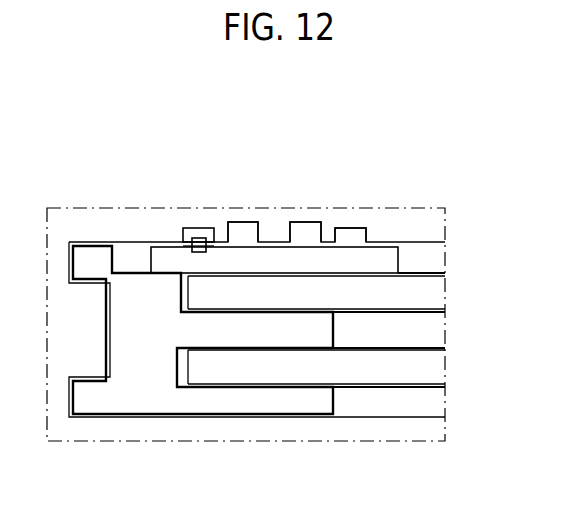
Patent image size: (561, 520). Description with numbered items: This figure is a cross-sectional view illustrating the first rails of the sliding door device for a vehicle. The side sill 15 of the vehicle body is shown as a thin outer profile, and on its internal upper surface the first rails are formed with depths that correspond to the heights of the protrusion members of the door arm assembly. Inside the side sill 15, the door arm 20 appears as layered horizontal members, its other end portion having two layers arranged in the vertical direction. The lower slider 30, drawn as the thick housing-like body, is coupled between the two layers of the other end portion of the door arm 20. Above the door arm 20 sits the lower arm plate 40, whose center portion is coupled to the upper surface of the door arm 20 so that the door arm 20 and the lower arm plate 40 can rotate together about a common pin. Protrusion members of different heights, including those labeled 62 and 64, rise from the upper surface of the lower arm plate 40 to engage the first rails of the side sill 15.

The side sill 15 is at (97, 428).
The door arm 20 is at (432, 293).
The lower slider 30 is at (147, 398).
The lower arm plate 40 is at (380, 256).
The protrusion 62 is at (350, 237).
The protrusion 64 is at (304, 228).